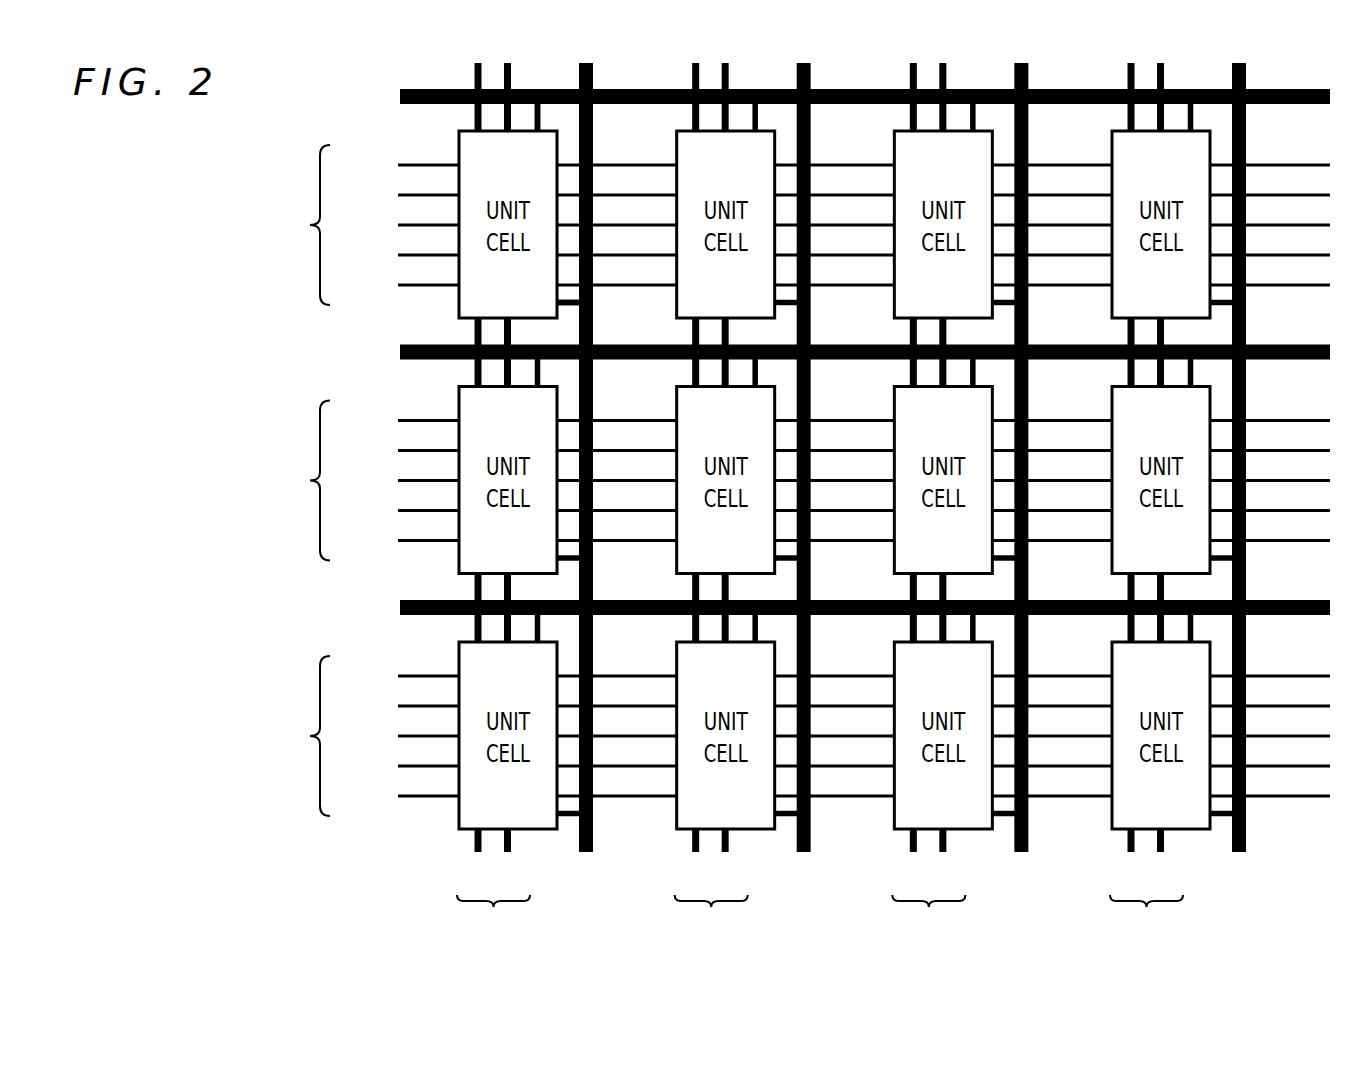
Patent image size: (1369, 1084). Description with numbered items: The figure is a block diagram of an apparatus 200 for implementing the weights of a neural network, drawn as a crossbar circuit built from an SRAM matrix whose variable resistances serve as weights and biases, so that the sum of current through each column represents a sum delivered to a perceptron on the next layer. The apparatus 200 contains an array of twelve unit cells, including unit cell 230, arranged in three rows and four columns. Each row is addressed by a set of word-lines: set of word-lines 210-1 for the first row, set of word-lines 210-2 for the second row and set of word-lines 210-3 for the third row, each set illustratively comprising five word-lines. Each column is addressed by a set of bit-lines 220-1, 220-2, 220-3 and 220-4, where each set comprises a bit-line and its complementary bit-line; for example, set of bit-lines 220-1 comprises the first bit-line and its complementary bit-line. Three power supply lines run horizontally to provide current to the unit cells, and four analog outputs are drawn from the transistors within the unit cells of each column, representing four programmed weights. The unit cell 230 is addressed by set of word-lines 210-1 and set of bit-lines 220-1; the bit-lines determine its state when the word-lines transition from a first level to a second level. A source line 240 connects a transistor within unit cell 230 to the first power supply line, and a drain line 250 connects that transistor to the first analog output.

The apparatus 200 is at (160, 139).
The set of word-lines 210-1 is at (786, 225).
The set of word-lines 210-2 is at (786, 481).
The set of word-lines 210-3 is at (786, 736).
The set of bit-lines 220-1 is at (493, 502).
The set of bit-lines 220-2 is at (711, 502).
The set of bit-lines 220-3 is at (928, 502).
The set of bit-lines 220-4 is at (1146, 502).
The unit cell 230 is at (457, 150).
The source line 240 is at (540, 120).
The drain line 250 is at (566, 306).